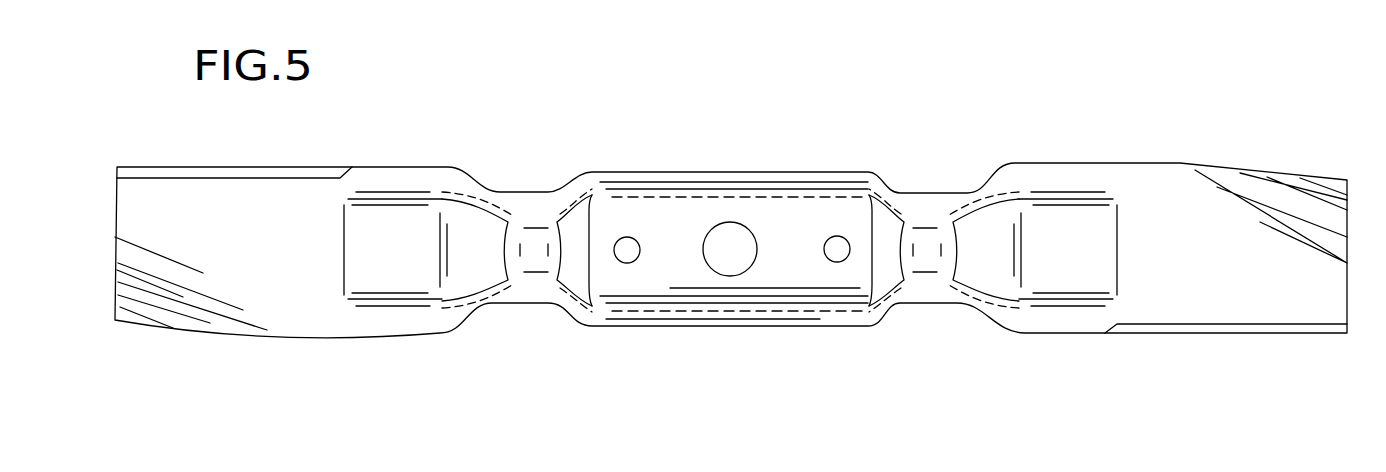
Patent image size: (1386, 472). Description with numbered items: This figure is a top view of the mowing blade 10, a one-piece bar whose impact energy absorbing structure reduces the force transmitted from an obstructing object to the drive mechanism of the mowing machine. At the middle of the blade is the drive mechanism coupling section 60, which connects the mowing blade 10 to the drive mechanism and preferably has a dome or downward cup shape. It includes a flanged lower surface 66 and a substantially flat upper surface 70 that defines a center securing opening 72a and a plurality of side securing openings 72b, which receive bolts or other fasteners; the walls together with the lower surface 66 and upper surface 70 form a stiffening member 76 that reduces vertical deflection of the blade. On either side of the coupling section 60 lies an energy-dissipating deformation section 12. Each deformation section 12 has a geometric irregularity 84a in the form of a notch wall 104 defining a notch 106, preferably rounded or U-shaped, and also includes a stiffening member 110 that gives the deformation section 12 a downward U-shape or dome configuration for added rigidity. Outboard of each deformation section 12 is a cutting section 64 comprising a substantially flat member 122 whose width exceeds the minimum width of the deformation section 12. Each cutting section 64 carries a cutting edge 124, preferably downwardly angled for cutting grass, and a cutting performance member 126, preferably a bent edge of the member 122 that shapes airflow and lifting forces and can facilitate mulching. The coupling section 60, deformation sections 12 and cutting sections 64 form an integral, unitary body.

The mowing blade 10 is at (1139, 80).
The deformation section 12 is at (457, 395).
The drive mechanism coupling section 60 is at (602, 350).
The cutting section 64 is at (122, 357).
The flanged lower surface 66 is at (605, 178).
The upper surface 70 is at (670, 240).
The center securing opening 72a is at (734, 238).
The side securing opening 72b is at (629, 244).
The stiffening member 76 is at (784, 243).
The geometric irregularity 84a is at (496, 168).
The notch wall 104 is at (478, 180).
The notch 106 is at (515, 189).
The stiffening member 110 is at (539, 244).
The flat member 122 is at (246, 217).
The cutting edge 124 is at (134, 168).
The cutting performance member 126 is at (1347, 180).